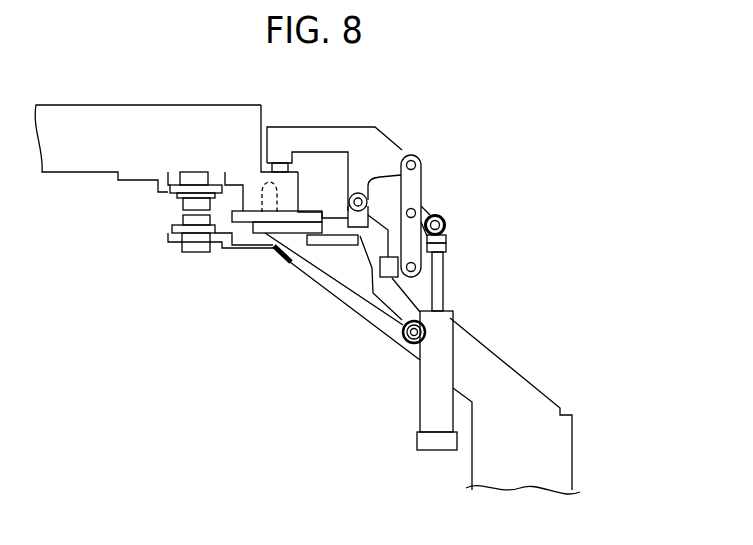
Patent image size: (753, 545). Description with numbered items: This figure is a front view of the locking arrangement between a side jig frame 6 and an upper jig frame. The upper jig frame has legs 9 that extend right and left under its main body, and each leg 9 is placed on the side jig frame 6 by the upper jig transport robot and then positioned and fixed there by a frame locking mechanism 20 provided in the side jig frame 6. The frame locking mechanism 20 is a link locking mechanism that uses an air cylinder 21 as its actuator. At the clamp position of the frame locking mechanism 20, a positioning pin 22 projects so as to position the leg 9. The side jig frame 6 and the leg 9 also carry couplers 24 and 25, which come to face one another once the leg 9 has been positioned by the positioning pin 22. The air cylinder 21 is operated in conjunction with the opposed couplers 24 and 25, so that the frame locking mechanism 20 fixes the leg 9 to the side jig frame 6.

The leg 9 is at (178, 120).
The positioning pin 22 is at (277, 192).
The coupler 25 is at (178, 203).
The coupler 24 is at (178, 218).
The frame locking mechanism 20 is at (470, 178).
The air cylinder 21 is at (453, 318).
The side jig frame 6 is at (530, 393).